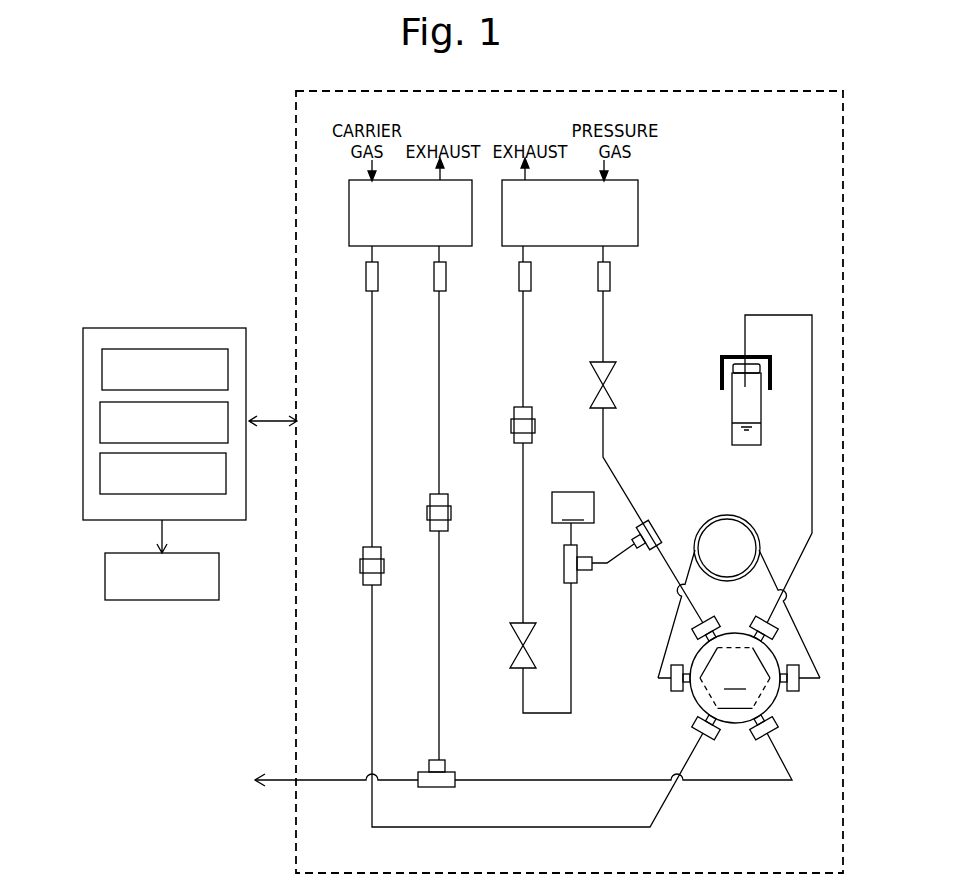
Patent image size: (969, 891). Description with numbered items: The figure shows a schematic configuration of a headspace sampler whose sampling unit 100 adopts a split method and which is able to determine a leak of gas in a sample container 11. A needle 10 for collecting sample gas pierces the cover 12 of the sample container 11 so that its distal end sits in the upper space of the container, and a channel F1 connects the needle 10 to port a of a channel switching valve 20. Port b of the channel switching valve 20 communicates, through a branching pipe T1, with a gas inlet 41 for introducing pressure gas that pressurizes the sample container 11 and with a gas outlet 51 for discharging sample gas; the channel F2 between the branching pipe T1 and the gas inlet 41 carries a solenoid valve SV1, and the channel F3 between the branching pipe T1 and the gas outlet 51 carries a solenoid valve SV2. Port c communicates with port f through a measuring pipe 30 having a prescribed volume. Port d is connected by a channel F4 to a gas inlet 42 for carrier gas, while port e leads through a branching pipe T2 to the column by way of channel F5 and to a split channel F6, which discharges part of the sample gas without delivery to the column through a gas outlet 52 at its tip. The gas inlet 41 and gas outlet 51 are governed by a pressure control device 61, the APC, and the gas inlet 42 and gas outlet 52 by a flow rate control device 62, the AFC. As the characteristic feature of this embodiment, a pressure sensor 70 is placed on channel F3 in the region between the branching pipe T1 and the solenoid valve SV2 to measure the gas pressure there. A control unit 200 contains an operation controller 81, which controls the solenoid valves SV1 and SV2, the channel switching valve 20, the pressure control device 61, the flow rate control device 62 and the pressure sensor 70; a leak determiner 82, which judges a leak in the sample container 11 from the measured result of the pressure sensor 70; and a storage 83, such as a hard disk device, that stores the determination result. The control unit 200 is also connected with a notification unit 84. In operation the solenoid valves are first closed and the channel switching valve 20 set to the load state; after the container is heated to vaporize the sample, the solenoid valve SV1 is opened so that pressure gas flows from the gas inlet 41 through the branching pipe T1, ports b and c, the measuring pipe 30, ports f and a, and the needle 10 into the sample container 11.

The sampling unit 100 is at (296, 695).
The control unit 200 is at (162, 328).
The operation controller 81 is at (102, 370).
The leak determiner 82 is at (100, 422).
The storage 83 is at (100, 475).
The notification unit 84 is at (105, 582).
The flow rate control device 62 is at (349, 215).
The pressure control device 61 is at (638, 213).
The gas inlet 41 is at (610, 275).
The gas inlet 42 is at (378, 275).
The gas outlet 51 is at (531, 275).
The gas outlet 52 is at (446, 275).
The needle 10 is at (747, 383).
The sample container 11 is at (732, 440).
The cover 12 is at (733, 369).
The channel switching valve 20 is at (735, 668).
The measuring pipe 30 is at (745, 517).
The pressure sensor 70 is at (593, 537).
The channel F1 is at (779, 307).
The channel F2 is at (603, 345).
The channel F3 is at (523, 370).
The channel F4 is at (658, 813).
The channel F5 is at (563, 778).
The split channel F6 is at (437, 652).
The solenoid valve SV1 is at (612, 402).
The solenoid valve SV2 is at (519, 622).
The branching pipe T1 is at (656, 557).
The branching pipe T2 is at (448, 772).